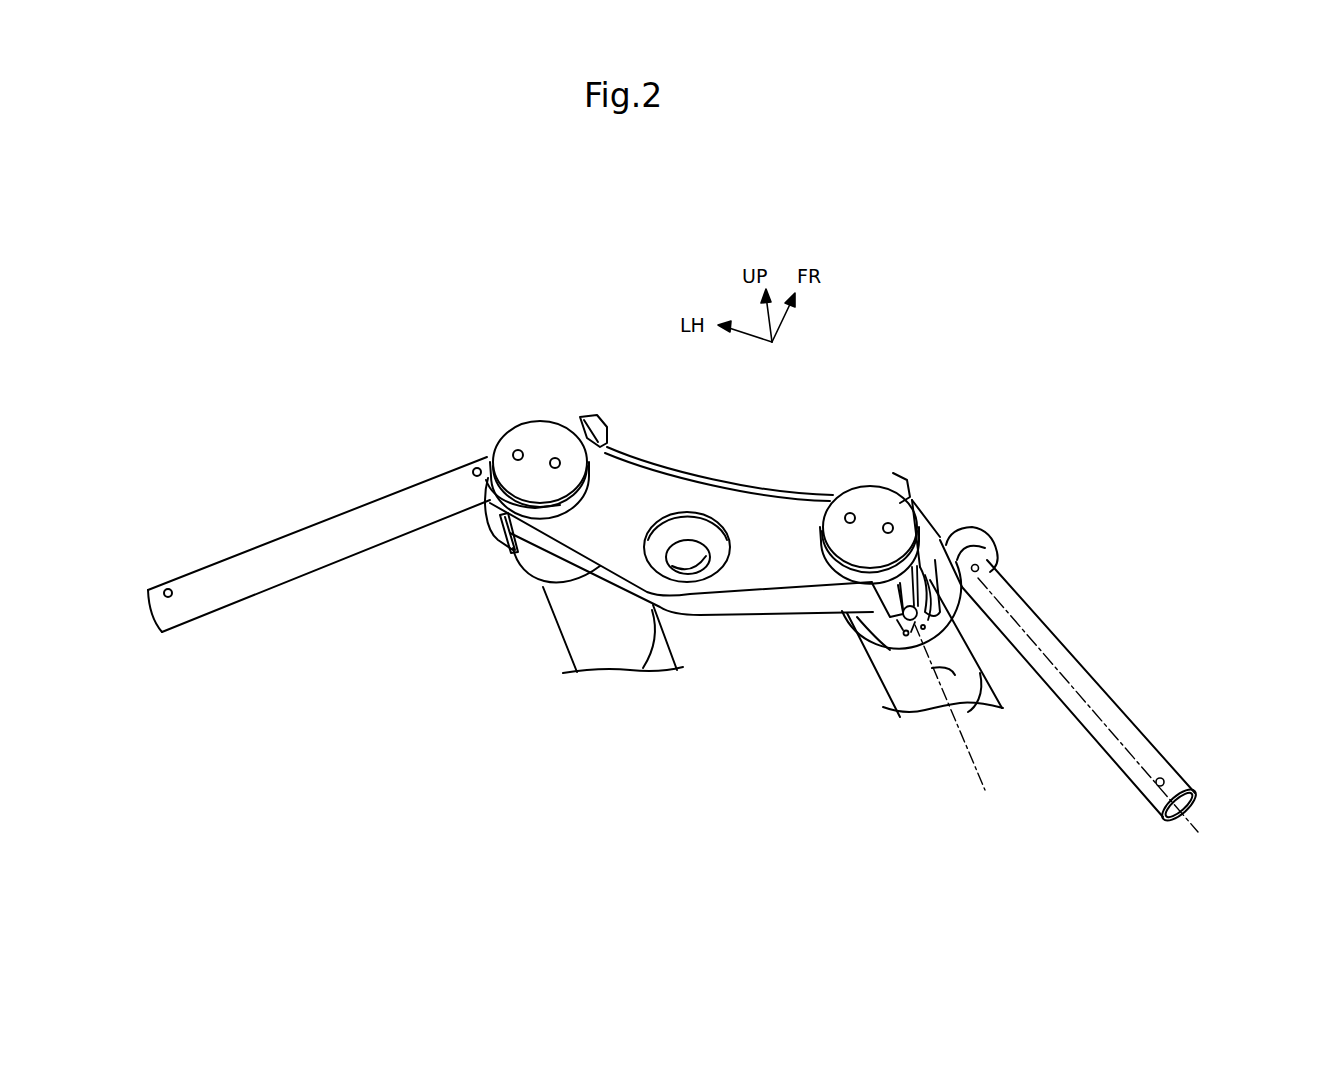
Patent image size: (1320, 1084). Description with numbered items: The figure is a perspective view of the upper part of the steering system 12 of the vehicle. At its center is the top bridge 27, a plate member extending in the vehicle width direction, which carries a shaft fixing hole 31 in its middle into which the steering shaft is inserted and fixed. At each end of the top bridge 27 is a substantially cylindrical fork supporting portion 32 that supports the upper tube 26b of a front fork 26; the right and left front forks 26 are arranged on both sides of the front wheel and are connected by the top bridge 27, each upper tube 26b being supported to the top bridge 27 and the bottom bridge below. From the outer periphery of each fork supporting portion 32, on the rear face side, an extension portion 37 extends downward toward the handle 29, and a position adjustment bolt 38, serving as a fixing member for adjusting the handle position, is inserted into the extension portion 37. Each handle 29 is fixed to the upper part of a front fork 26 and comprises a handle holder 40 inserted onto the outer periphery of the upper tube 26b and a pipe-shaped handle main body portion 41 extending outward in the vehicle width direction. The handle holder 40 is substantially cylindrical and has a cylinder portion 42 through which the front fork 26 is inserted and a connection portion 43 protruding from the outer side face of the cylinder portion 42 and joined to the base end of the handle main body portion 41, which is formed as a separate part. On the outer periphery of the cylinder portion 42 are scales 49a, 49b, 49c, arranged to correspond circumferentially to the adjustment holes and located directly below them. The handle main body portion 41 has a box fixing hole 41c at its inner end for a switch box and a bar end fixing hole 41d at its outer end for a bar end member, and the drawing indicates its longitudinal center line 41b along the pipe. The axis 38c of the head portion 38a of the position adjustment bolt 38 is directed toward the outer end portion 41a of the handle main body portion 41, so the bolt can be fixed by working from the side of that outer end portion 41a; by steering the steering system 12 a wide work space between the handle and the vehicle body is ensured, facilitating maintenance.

The steering system 12 is at (872, 460).
The front fork 26 is at (558, 639).
The upper tube 26b is at (612, 657).
The top bridge 27 is at (728, 481).
The handle 29 is at (324, 514).
The shaft fixing hole 31 is at (681, 550).
The fork supporting portion 32 is at (467, 514).
The extension portion 37 is at (502, 550).
The position adjustment bolt 38 is at (497, 540).
The head portion 38a is at (873, 640).
The axis 38c is at (970, 715).
The handle holder 40 is at (528, 572).
The handle main body portion 41 is at (273, 552).
The outer end portion 41a is at (1172, 824).
The pipe axis 41b is at (1100, 705).
The box fixing hole 41c is at (981, 567).
The bar end fixing hole 41d is at (1168, 776).
The cylinder portion 42 is at (528, 575).
The connection portion 43 is at (974, 534).
The scale 49a is at (901, 620).
The scale 49b is at (916, 625).
The scale 49c is at (945, 642).